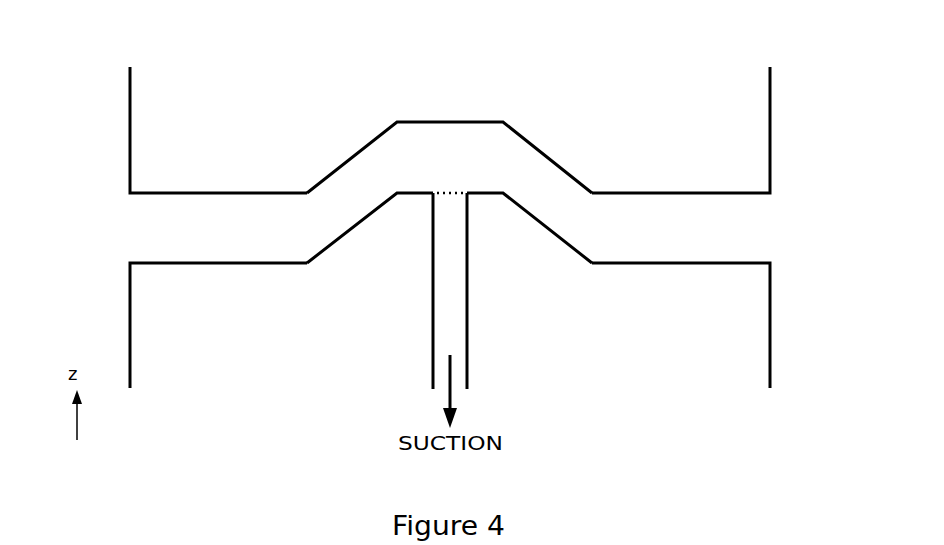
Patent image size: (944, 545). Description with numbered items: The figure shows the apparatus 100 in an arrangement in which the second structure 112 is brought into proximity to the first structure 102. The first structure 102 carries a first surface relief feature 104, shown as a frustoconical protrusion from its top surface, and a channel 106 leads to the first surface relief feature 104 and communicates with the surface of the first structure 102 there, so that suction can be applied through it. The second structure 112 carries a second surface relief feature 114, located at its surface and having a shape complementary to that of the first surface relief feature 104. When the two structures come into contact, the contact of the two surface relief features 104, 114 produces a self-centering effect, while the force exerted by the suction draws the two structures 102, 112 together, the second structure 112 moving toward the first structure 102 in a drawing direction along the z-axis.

The apparatus 100 is at (107, 124).
The first structure 102 is at (130, 283).
The first surface relief feature 104 is at (567, 246).
The channel 106 is at (433, 322).
The second structure 112 is at (130, 154).
The second surface relief feature 114 is at (543, 150).